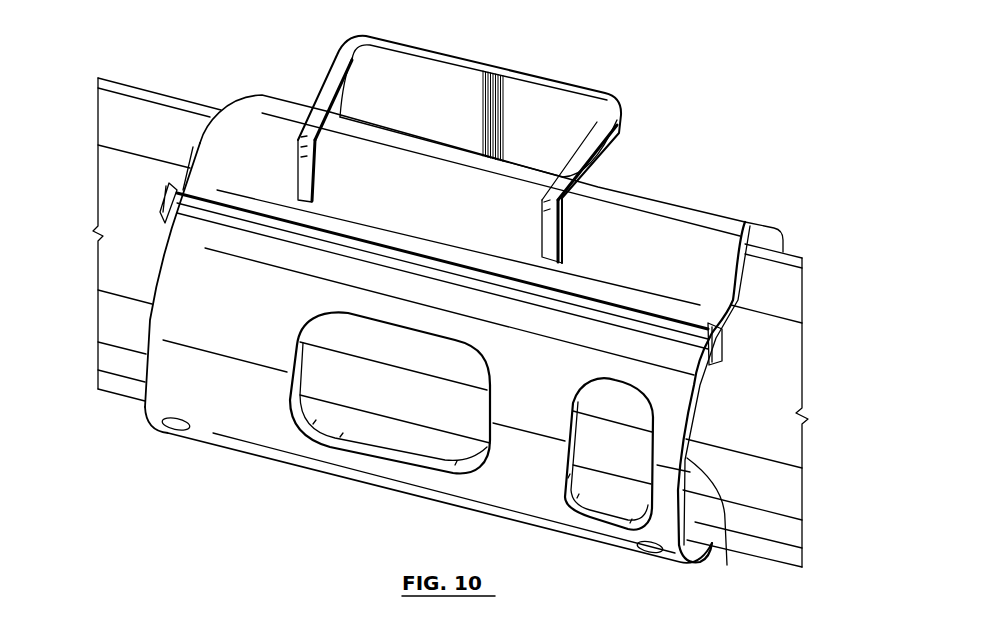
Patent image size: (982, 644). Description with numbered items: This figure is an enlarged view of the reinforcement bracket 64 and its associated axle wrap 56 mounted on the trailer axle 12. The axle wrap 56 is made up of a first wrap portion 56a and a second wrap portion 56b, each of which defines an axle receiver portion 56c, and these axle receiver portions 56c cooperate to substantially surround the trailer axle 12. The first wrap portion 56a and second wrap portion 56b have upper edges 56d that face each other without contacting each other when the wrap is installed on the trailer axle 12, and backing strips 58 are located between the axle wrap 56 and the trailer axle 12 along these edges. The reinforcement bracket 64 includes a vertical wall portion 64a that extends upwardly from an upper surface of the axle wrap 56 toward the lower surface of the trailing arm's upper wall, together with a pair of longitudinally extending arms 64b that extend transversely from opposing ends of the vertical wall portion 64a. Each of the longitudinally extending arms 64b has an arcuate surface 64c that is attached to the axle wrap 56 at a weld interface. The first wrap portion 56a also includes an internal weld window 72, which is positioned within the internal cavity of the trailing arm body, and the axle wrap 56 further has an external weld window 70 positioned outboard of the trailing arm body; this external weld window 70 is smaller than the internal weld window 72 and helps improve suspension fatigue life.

The trailer axle 12 is at (770, 367).
The axle wrap 56 is at (798, 240).
The first wrap portion 56a is at (238, 383).
The second wrap portion 56b is at (703, 233).
The axle receiver portion 56c is at (733, 300).
The upper edges 56d is at (209, 180).
The backing strips 58 is at (198, 213).
The reinforcement bracket 64 is at (602, 70).
The vertical wall portion 64a is at (445, 100).
The longitudinally extending arms 64b is at (320, 110).
The arcuate surface 64c is at (323, 143).
The external weld window 70 is at (612, 518).
The internal weld window 72 is at (382, 453).